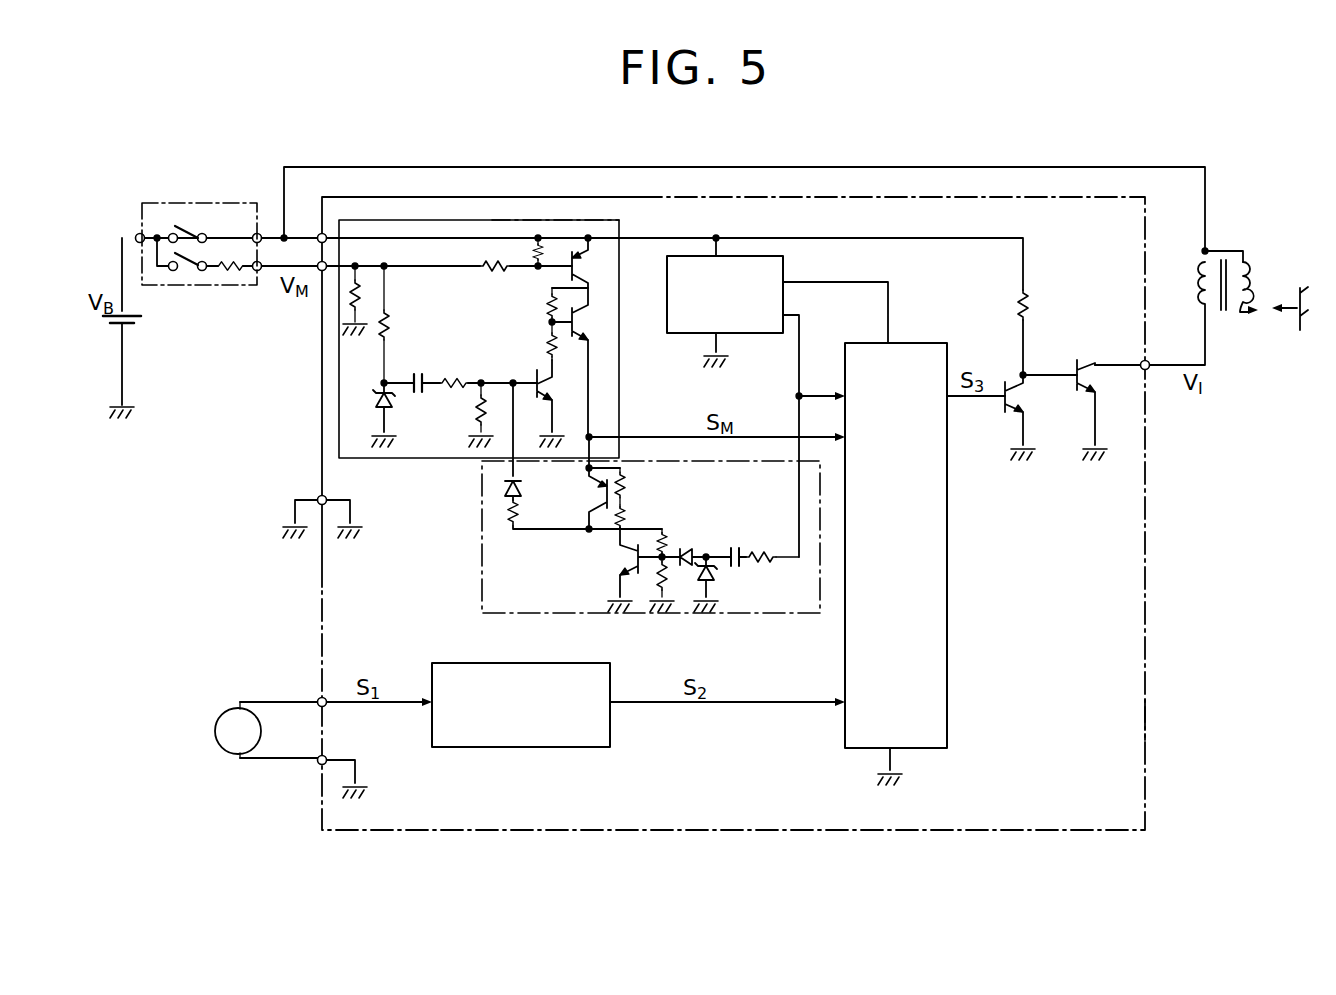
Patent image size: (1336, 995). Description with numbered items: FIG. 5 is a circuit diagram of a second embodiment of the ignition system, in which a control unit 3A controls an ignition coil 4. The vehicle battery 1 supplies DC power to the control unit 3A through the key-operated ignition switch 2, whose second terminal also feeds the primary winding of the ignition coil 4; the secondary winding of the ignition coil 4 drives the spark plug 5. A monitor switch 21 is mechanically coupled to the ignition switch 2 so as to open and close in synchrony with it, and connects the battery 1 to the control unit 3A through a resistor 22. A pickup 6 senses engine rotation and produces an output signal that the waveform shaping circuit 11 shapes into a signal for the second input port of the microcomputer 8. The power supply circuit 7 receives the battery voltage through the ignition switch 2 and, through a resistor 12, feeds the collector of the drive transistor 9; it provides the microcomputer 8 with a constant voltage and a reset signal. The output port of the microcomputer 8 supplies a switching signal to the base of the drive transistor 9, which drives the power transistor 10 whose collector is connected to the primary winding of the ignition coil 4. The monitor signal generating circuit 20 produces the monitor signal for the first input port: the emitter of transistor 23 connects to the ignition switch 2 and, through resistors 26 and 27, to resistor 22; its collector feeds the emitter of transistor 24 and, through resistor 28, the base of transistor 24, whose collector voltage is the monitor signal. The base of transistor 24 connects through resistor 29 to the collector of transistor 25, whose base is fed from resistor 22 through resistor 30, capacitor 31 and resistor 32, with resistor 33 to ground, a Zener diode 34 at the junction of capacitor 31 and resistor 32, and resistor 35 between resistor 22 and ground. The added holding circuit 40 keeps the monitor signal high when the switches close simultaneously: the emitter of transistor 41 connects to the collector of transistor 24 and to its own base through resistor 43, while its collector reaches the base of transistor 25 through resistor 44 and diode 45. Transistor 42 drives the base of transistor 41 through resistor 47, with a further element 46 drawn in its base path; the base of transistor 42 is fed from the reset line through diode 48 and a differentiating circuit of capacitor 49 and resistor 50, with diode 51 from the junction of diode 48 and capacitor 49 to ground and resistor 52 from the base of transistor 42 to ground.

The battery 1 is at (138, 318).
The ignition switch 2 is at (198, 230).
The control unit 3A is at (1148, 583).
The ignition coil 4 is at (1223, 251).
The spark plug 5 is at (1269, 306).
The pickup 6 is at (213, 733).
The power supply circuit 7 is at (784, 262).
The microcomputer 8 is at (950, 585).
The drive transistor 9 is at (1017, 402).
The power transistor 10 is at (1090, 382).
The waveform shaping circuit 11 is at (510, 749).
The resistor 12 is at (1030, 310).
The monitor signal generating circuit 20 is at (410, 460).
The monitor switch 21 is at (188, 272).
The resistor 22 is at (229, 272).
The transistor 23 is at (588, 262).
The transistor 24 is at (590, 323).
The transistor 25 is at (553, 389).
The resistor 26 is at (536, 255).
The resistor 27 is at (494, 273).
The resistor 28 is at (551, 321).
The resistor 29 is at (551, 353).
The resistor 30 is at (453, 378).
The capacitor 31 is at (418, 375).
The resistor 32 is at (393, 328).
The resistor 33 is at (479, 421).
The Zener diode 34 is at (382, 412).
The resistor 35 is at (352, 303).
The holding circuit 40 is at (785, 615).
The transistor 41 is at (600, 495).
The transistor 42 is at (630, 560).
The resistor 43 is at (626, 485).
The resistor 44 is at (515, 513).
The diode 45 is at (506, 485).
The resistor 46 is at (668, 537).
The resistor 47 is at (626, 515).
The diode 48 is at (688, 568).
The capacitor 49 is at (748, 566).
The resistor 50 is at (766, 552).
The diode 51 is at (712, 582).
The resistor 52 is at (658, 591).